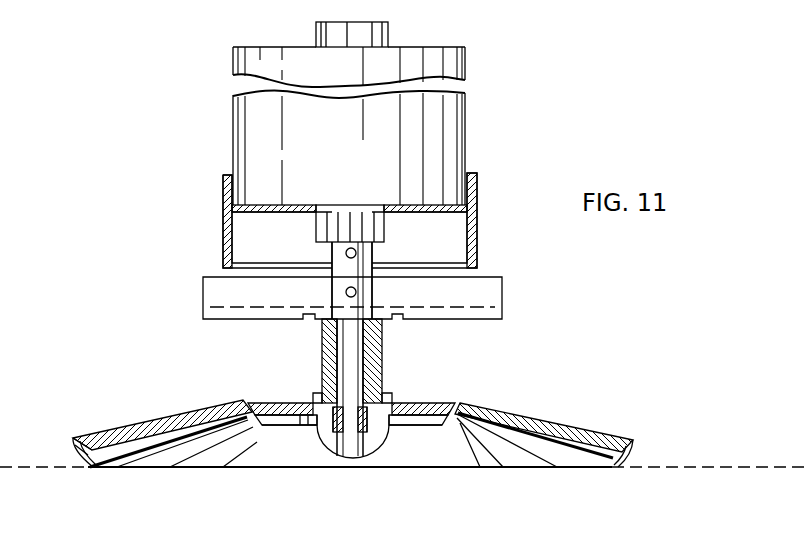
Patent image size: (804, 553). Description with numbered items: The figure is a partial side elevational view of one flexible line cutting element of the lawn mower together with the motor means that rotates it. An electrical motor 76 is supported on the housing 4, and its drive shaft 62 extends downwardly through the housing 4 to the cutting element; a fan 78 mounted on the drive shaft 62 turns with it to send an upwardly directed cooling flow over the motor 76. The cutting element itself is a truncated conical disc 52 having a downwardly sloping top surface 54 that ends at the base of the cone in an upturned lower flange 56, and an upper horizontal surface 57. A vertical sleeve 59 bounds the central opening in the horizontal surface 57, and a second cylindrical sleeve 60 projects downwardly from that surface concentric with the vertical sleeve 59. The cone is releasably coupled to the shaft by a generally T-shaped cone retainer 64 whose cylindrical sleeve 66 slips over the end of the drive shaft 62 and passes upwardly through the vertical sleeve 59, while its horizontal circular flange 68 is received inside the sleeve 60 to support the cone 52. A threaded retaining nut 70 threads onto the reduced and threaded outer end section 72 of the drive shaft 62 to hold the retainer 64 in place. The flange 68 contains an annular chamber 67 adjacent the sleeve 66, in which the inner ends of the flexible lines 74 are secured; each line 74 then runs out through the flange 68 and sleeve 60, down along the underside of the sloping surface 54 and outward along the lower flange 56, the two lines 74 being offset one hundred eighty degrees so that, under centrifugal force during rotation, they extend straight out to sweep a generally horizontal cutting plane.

The housing 4 is at (475, 226).
The conical disc 52 is at (196, 411).
The downwardly sloping top surface 54 is at (163, 434).
The upturned lower flange 56 is at (75, 443).
The horizontal surface 57 is at (279, 401).
The vertical sleeve 59 is at (394, 401).
The second cylindrical sleeve 60 is at (454, 425).
The drive shaft 62 is at (357, 311).
The cone retainer 64 is at (386, 354).
The cylindrical sleeve 66 is at (322, 344).
The annular chamber 67 is at (304, 425).
The circular flange 68 is at (252, 427).
The threaded retaining nut 70 is at (394, 439).
The threaded outer end section 72 is at (355, 445).
The line cutting element 74 is at (56, 471).
The electrical motor 76 is at (443, 72).
The fan 78 is at (473, 299).